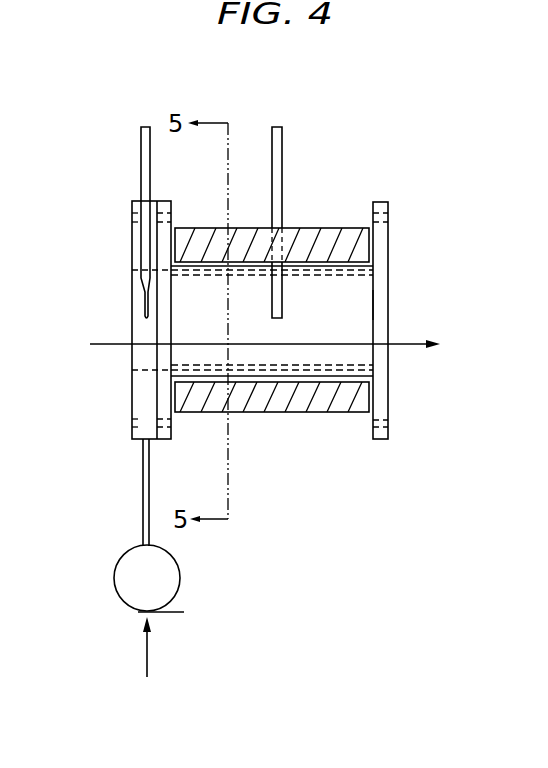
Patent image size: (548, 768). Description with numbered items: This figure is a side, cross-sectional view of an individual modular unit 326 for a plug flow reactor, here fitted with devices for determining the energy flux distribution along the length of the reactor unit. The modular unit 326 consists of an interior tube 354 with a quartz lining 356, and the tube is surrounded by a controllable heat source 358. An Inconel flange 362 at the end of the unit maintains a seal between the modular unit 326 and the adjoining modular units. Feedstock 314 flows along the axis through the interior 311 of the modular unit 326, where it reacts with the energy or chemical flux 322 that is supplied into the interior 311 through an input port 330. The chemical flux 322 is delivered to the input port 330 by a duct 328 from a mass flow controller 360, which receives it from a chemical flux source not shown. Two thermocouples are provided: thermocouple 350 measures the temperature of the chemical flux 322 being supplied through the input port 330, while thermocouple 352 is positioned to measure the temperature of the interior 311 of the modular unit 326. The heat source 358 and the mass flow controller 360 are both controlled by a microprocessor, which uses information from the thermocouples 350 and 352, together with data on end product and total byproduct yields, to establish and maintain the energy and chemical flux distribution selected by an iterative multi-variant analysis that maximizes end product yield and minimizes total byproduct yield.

The interior 311 is at (360, 302).
The feedstock 314 is at (410, 346).
The chemical flux 322 is at (147, 663).
The modular unit 326 is at (337, 237).
The duct 328 is at (143, 479).
The input port 330 is at (141, 396).
The thermocouple 350 is at (141, 156).
The thermocouple 352 is at (282, 198).
The interior tube 354 is at (325, 380).
The quartz lining 356 is at (313, 278).
The controllable heat source 358 is at (262, 413).
The mass flow controller 360 is at (125, 585).
The Inconel flange 362 is at (380, 402).